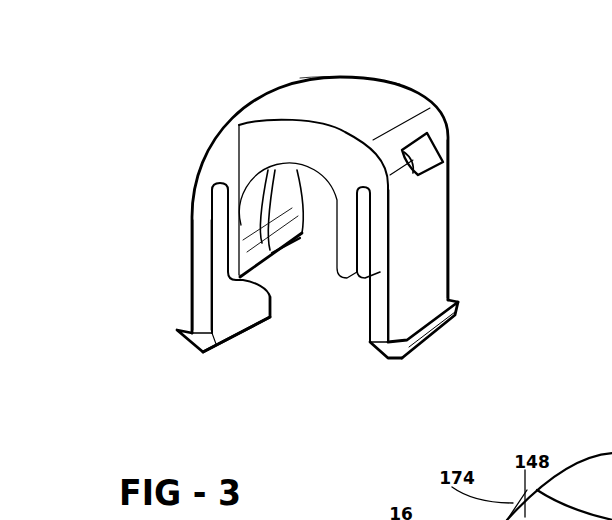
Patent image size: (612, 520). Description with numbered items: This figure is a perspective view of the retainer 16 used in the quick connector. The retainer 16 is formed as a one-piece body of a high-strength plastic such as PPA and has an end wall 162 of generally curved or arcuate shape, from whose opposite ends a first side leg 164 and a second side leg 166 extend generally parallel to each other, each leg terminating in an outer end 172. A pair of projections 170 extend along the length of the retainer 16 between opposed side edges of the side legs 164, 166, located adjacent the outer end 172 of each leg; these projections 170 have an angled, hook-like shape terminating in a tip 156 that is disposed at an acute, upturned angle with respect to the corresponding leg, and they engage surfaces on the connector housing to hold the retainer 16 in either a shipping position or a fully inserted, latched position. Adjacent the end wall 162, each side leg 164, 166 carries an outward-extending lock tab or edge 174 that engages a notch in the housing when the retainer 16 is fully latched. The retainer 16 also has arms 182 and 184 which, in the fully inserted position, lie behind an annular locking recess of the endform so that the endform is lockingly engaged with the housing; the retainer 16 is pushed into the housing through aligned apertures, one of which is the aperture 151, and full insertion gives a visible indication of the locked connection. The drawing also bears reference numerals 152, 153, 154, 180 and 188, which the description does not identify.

The retainer 16 is at (180, 100).
The aperture 151 is at (448, 195).
The bottom edge of first leg 152 is at (205, 352).
The first leg 153 is at (190, 172).
The outer side surface of first leg 154 is at (205, 233).
The tip 156 is at (180, 332).
The end wall 162 is at (388, 95).
The first side leg 164 is at (440, 247).
The second side leg 166 is at (200, 275).
The projection 170 is at (177, 343).
The outer end 172 is at (232, 342).
The lock tab 174 is at (437, 150).
The opening 180 is at (312, 275).
The arm 182 is at (347, 233).
The arm 184 is at (222, 217).
The tongue 188 is at (288, 165).